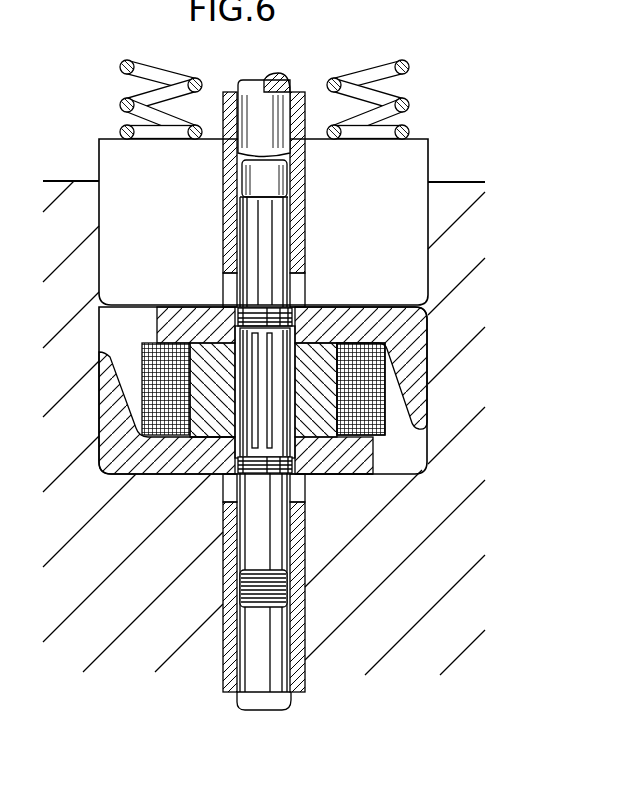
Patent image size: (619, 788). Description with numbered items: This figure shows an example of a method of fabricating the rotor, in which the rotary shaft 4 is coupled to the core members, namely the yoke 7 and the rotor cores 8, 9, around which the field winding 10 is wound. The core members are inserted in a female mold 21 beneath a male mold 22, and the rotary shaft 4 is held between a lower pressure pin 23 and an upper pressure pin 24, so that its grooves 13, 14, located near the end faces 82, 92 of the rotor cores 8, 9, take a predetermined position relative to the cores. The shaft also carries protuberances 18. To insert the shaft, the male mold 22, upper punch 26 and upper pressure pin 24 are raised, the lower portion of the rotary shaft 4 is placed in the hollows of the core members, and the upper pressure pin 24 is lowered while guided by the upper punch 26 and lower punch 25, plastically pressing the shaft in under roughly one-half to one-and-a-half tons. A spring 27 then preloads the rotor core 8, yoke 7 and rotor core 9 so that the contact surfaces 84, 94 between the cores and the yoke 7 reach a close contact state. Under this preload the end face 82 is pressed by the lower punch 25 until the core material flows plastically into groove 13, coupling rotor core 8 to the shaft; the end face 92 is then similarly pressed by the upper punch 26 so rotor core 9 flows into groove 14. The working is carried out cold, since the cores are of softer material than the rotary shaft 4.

The rotary shaft 4 is at (276, 533).
The yoke 7 is at (213, 355).
The rotor core 8 is at (372, 453).
The rotor core 9 is at (417, 410).
The field winding 10 is at (146, 342).
The groove 13 is at (280, 480).
The groove 14 is at (280, 303).
The protuberances 18 is at (318, 473).
The female mold 21 is at (368, 653).
The male mold 22 is at (413, 160).
The lower pressure pin 23 is at (287, 703).
The upper pressure pin 24 is at (252, 92).
The lower punch 25 is at (307, 683).
The upper punch 26 is at (300, 96).
The spring 27 is at (350, 83).
The end face 82 is at (368, 475).
The contact surface 84 is at (215, 435).
The end face 92 is at (383, 307).
The contact surface 94 is at (321, 348).